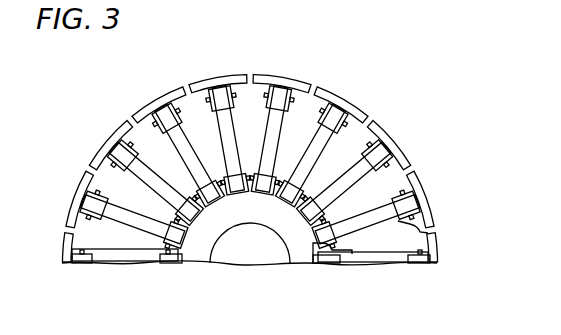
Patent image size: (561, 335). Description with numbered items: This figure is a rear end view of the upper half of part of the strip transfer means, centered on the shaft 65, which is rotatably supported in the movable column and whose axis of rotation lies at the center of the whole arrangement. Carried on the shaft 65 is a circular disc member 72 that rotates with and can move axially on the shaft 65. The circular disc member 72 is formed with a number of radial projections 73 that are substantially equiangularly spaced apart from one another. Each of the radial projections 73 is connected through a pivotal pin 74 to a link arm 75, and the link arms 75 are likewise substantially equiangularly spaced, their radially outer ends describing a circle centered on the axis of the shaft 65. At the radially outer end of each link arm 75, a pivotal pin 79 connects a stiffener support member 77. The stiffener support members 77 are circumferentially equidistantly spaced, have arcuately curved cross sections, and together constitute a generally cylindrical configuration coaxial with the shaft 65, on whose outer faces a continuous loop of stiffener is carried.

The shaft 65 is at (238, 263).
The circular disc member 72 is at (184, 263).
The radial projections 73 is at (313, 263).
The pivotal pins 74 is at (352, 243).
The link arms 75 is at (145, 89).
The stiffener support members 77 is at (425, 194).
The pivotal pin 79 is at (428, 229).